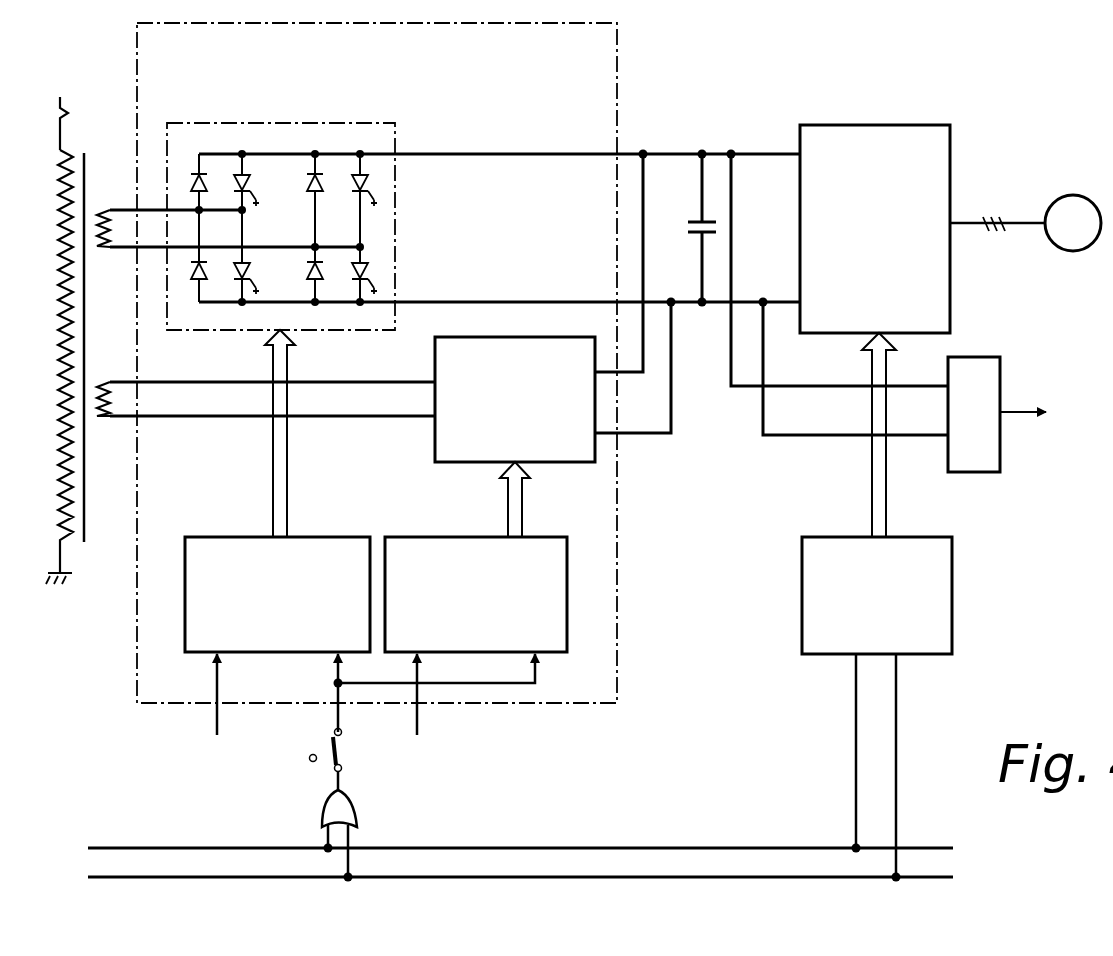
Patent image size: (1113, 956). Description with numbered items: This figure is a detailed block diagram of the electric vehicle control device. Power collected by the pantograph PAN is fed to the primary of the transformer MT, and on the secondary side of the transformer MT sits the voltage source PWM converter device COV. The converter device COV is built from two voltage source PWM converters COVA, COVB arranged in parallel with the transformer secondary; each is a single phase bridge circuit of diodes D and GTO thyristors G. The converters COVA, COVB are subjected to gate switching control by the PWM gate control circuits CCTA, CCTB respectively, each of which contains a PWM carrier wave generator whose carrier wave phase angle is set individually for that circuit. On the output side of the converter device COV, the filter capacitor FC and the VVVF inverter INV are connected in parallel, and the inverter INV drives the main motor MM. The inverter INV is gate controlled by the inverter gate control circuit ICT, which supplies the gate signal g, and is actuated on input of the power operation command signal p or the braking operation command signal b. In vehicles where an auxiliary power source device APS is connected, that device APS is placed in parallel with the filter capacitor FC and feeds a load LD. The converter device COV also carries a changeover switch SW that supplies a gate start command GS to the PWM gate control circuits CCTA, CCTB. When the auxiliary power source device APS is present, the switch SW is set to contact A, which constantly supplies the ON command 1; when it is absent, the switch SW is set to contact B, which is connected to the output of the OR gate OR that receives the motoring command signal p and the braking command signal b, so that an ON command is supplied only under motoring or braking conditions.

The pantograph PAN is at (64, 94).
The transformer MT is at (84, 530).
The voltage source PWM converter device COV is at (617, 85).
The voltage source PWM converter COVA is at (455, 208).
The voltage source PWM converter COVB is at (430, 445).
The diode D is at (196, 172).
The GTO thyristor G is at (311, 228).
The filter capacitor FC is at (697, 218).
The VVVF inverter INV is at (910, 123).
The main motor MM is at (1025, 223).
The auxiliary power source device APS is at (985, 357).
The load LD is at (1041, 414).
The PWM gate control circuit CCTA is at (216, 537).
The PWM gate control circuit CCTB is at (422, 537).
The inverter gate control circuit ICT is at (832, 537).
The inverter gate signal g is at (887, 495).
The gate stop signal GS is at (435, 693).
The changeover switch SW is at (329, 753).
The contact A is at (309, 758).
The contact B is at (342, 768).
The ON command 1 is at (281, 780).
The OR gate OR is at (360, 812).
The power operation command signal p is at (520, 753).
The braking operation command signal b is at (520, 768).